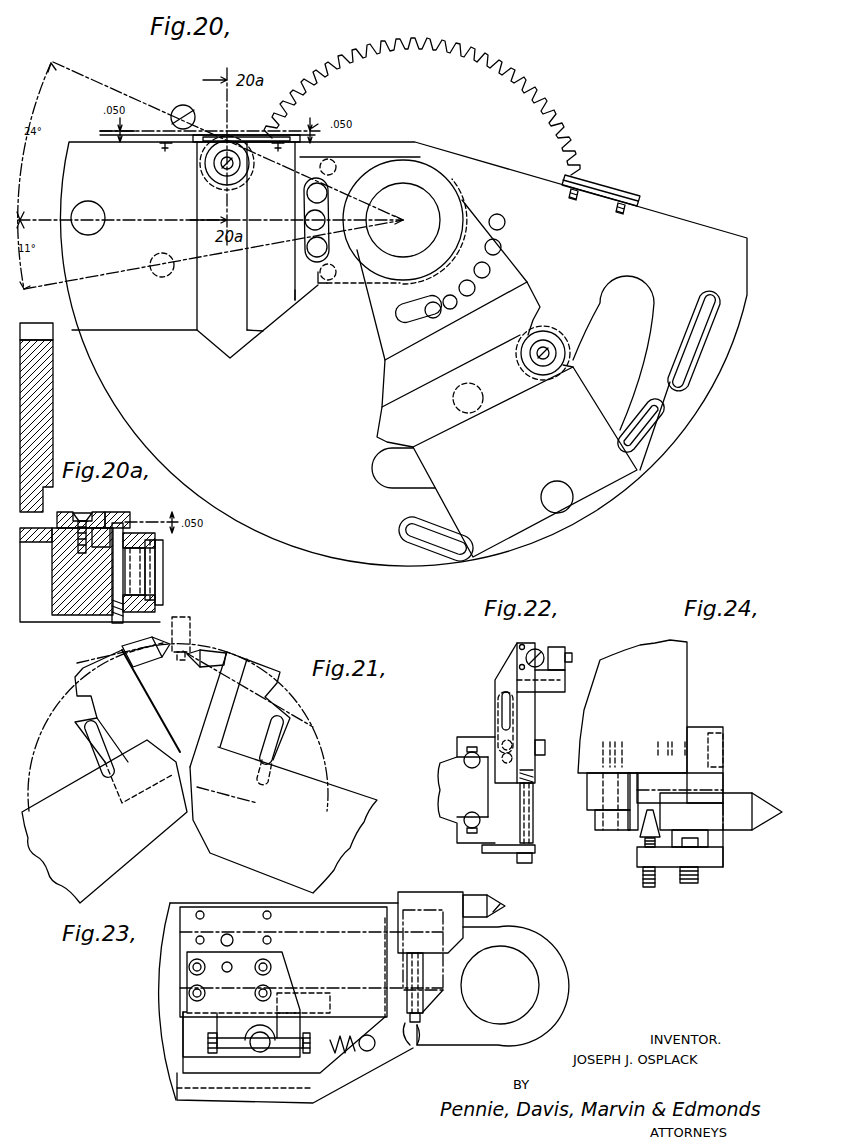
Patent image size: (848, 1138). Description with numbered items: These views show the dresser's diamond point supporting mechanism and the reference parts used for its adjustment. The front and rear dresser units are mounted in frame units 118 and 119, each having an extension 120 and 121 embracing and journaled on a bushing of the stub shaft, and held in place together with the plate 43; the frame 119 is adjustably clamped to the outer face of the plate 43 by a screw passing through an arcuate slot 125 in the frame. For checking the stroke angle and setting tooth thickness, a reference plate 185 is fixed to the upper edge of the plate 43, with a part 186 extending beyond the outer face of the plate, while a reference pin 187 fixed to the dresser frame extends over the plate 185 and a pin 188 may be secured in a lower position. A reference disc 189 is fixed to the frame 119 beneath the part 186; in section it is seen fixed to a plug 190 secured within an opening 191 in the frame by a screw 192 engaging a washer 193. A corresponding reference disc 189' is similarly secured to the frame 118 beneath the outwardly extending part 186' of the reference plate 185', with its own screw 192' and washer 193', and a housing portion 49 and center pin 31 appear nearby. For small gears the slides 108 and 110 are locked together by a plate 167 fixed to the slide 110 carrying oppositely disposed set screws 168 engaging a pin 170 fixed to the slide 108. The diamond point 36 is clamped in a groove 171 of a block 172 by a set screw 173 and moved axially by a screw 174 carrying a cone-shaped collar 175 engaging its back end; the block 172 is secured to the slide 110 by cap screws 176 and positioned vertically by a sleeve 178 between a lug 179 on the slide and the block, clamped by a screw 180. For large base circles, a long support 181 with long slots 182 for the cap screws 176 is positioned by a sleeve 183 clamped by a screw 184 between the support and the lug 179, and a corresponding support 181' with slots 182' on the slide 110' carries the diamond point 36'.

In FIG. 20, the plate 43 is at (333, 555).
In FIG. 20A, the plate 43 is at (62, 578).
In FIG. 20A, the headstock housing 49 is at (45, 420).
In FIG. 21, the center pin 31 is at (184, 616).
In FIG. 21, the diamond point 36 is at (146, 663).
In FIG. 22, the diamond point 36 is at (555, 644).
In FIG. 24, the diamond point 36 is at (721, 798).
In FIG. 23, the diamond point 36 is at (484, 891).
In FIG. 21, the diamond point 36' is at (207, 641).
In FIG. 23, the slide 108 is at (188, 1062).
In FIG. 21, the slide 110 is at (104, 821).
In FIG. 24, the slide 110 is at (655, 706).
In FIG. 23, the slide 110 is at (311, 949).
In FIG. 21, the slide 110' is at (296, 820).
In FIG. 20, the frame unit 118 is at (383, 396).
In FIG. 20, the frame unit 119 is at (245, 340).
In FIG. 20A, the frame unit 119 is at (124, 540).
In FIG. 23, the frame unit 119 is at (340, 1105).
In FIG. 20, the extension 120 is at (384, 310).
In FIG. 20, the extension 121 is at (392, 243).
In FIG. 20, the arcuate slot 125 is at (297, 298).
In FIG. 23, the plate 167 is at (222, 1022).
In FIG. 23, the set screws 168 is at (270, 1054).
In FIG. 23, the pin 170 is at (258, 1050).
In FIG. 22, the groove 171 is at (520, 645).
In FIG. 24, the block 172 is at (724, 773).
In FIG. 23, the block 172 is at (432, 898).
In FIG. 24, the set screw 173 is at (705, 860).
In FIG. 24, the screw 174 is at (643, 877).
In FIG. 24, the cone-shaped collar 175 is at (643, 835).
In FIG. 22, the cap screws 176 is at (545, 747).
In FIG. 24, the cap screws 176 is at (725, 730).
In FIG. 23, the sleeve 178 is at (425, 1003).
In FIG. 22, the lug 179 is at (536, 850).
In FIG. 23, the lug 179 is at (428, 1042).
In FIG. 23, the screw 180 is at (410, 1055).
In FIG. 21, the support 181 is at (112, 726).
In FIG. 22, the support 181 is at (546, 713).
In FIG. 21, the support 181' is at (269, 709).
In FIG. 21, the slots 182 is at (79, 749).
In FIG. 22, the slots 182 is at (482, 713).
In FIG. 21, the slots 182' is at (311, 750).
In FIG. 22, the sleeve 183 is at (534, 821).
In FIG. 22, the screw 184 is at (525, 863).
In FIG. 20, the reference plate 185 is at (236, 120).
In FIG. 20A, the reference plate 185 is at (80, 521).
In FIG. 20, the reference plate 185' is at (630, 201).
In FIG. 20, the part 186 is at (259, 115).
In FIG. 20A, the part 186 is at (124, 519).
In FIG. 20, the part 186' is at (615, 181).
In FIG. 20, the reference pin 187 is at (185, 105).
In FIG. 20, the pin 188 is at (160, 277).
In FIG. 20, the reference disc 189 is at (242, 170).
In FIG. 20A, the reference disc 189 is at (106, 621).
In FIG. 20, the reference disc 189' is at (556, 337).
In FIG. 20A, the plug 190 is at (137, 571).
In FIG. 20A, the opening 191 is at (152, 592).
In FIG. 20, the screw 192 is at (201, 171).
In FIG. 20A, the screw 192 is at (176, 570).
In FIG. 20, the screw 192' is at (544, 379).
In FIG. 20, the washer 193 is at (195, 192).
In FIG. 20A, the washer 193 is at (165, 544).
In FIG. 20, the washer 193' is at (513, 339).